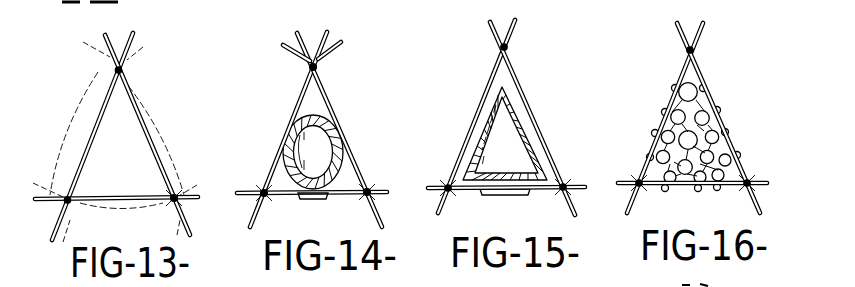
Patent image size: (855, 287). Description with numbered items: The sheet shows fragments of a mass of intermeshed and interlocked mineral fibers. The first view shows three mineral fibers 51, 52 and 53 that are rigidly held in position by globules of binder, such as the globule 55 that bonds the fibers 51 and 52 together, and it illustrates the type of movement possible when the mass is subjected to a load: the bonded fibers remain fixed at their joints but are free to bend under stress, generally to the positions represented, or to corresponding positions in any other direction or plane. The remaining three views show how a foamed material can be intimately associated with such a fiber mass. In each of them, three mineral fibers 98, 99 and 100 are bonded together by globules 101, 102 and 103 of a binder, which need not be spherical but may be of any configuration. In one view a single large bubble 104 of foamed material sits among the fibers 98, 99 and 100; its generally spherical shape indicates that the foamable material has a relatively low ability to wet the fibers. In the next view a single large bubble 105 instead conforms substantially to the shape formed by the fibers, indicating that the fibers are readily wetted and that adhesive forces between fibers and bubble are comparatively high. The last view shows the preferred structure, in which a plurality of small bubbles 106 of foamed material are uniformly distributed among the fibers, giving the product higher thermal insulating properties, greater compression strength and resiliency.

In FIG. 13, the mineral fiber 51 is at (141, 114).
In FIG. 13, the mineral fiber 52 is at (135, 170).
In FIG. 13, the mineral fiber 53 is at (124, 71).
In FIG. 13, the globule of binder 55 is at (177, 194).
In FIG. 14, the mineral fiber 98 is at (328, 98).
In FIG. 15, the mineral fiber 98 is at (512, 70).
In FIG. 16, the mineral fiber 98 is at (699, 65).
In FIG. 14, the mineral fiber 99 is at (350, 195).
In FIG. 15, the mineral fiber 99 is at (543, 190).
In FIG. 16, the mineral fiber 99 is at (733, 186).
In FIG. 14, the mineral fiber 100 is at (302, 95).
In FIG. 15, the mineral fiber 100 is at (492, 77).
In FIG. 16, the mineral fiber 100 is at (648, 163).
In FIG. 14, the globule of binder 101 is at (319, 69).
In FIG. 14, the globule of binder 102 is at (369, 184).
In FIG. 14, the globule of binder 103 is at (262, 198).
In FIG. 14, the bubble of foamed material 104 is at (330, 142).
In FIG. 15, the bubble of foamed material 105 is at (531, 115).
In FIG. 16, the small bubbles of foamed material 106 is at (697, 97).